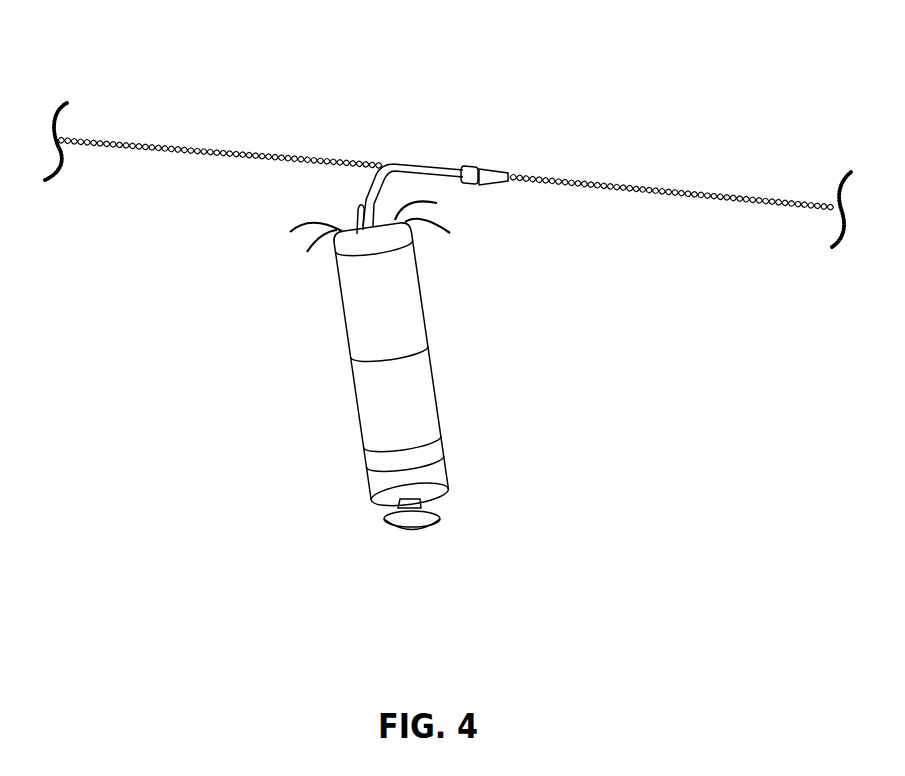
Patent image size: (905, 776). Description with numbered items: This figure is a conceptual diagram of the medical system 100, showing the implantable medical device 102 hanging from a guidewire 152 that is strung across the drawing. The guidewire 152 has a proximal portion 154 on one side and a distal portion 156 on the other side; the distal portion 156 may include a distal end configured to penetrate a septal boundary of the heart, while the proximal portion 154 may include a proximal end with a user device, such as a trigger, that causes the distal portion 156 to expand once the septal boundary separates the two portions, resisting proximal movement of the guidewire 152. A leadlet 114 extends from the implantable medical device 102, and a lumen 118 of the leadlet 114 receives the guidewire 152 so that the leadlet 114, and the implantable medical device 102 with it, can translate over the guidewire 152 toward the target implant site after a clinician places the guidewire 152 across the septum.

The medical system 100 is at (133, 58).
The implantable medical device 102 is at (344, 540).
The leadlet 114 is at (427, 165).
The lumen 118 is at (507, 176).
The guidewire 152 is at (587, 183).
The proximal portion 154 is at (115, 140).
The distal portion 156 is at (805, 202).